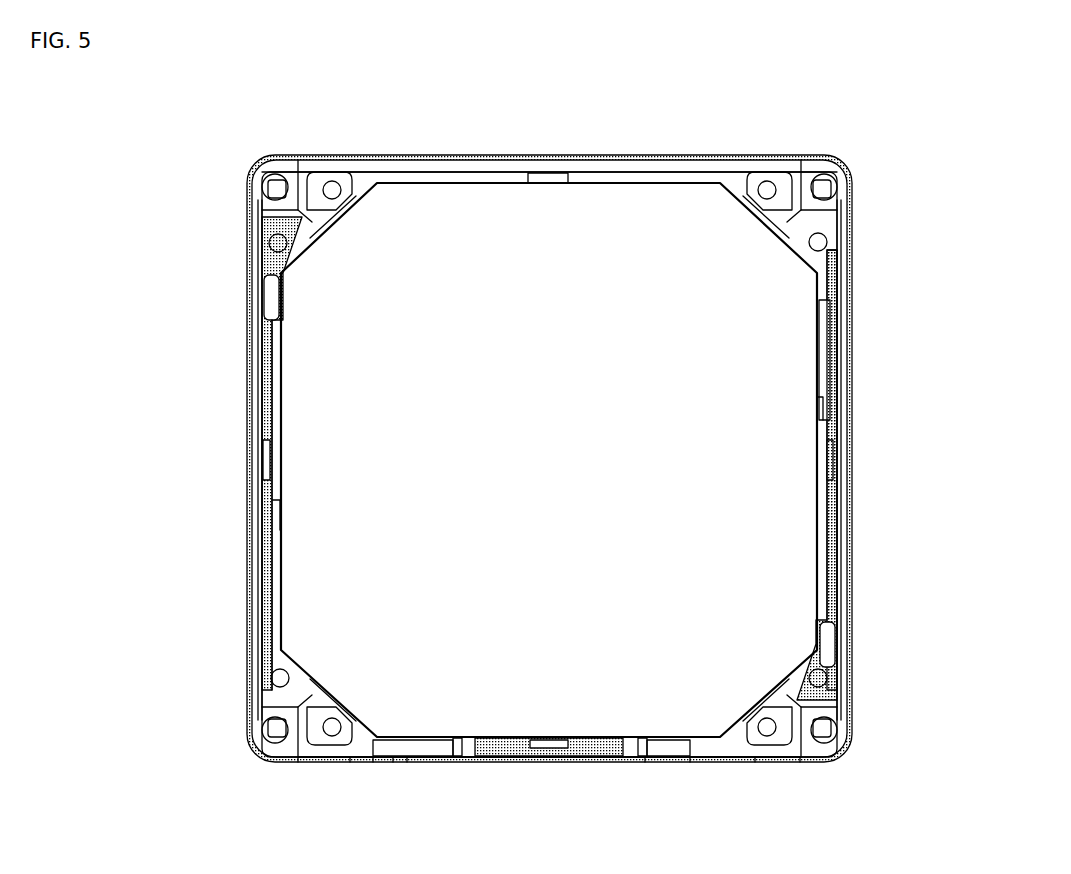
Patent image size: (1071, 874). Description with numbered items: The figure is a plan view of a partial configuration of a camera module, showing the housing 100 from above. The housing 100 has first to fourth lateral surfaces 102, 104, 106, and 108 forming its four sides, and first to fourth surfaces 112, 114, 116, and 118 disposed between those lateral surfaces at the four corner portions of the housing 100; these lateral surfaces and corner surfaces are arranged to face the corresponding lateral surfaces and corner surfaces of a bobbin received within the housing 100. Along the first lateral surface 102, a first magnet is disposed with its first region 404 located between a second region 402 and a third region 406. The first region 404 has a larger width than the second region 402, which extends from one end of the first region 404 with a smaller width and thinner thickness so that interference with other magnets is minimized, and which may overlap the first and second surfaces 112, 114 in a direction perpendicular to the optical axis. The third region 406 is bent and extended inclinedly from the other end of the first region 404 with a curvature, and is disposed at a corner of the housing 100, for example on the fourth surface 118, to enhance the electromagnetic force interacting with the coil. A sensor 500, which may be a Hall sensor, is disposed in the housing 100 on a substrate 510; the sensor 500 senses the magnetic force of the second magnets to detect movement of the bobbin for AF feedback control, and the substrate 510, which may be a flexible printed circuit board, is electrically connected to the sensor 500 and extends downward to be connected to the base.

The housing 100 is at (845, 159).
The first lateral surface 102 is at (278, 536).
The second lateral surface 104 is at (470, 743).
The third lateral surface 106 is at (822, 322).
The fourth lateral surface 108 is at (586, 177).
The first surface 112 is at (315, 695).
The second surface 114 is at (790, 700).
The third surface 116 is at (763, 212).
The fourth surface 118 is at (317, 212).
The second region 402 is at (257, 598).
The first region 404 is at (257, 387).
The third region 406 is at (267, 260).
The sensor 500 is at (553, 746).
The substrate 510 is at (668, 758).